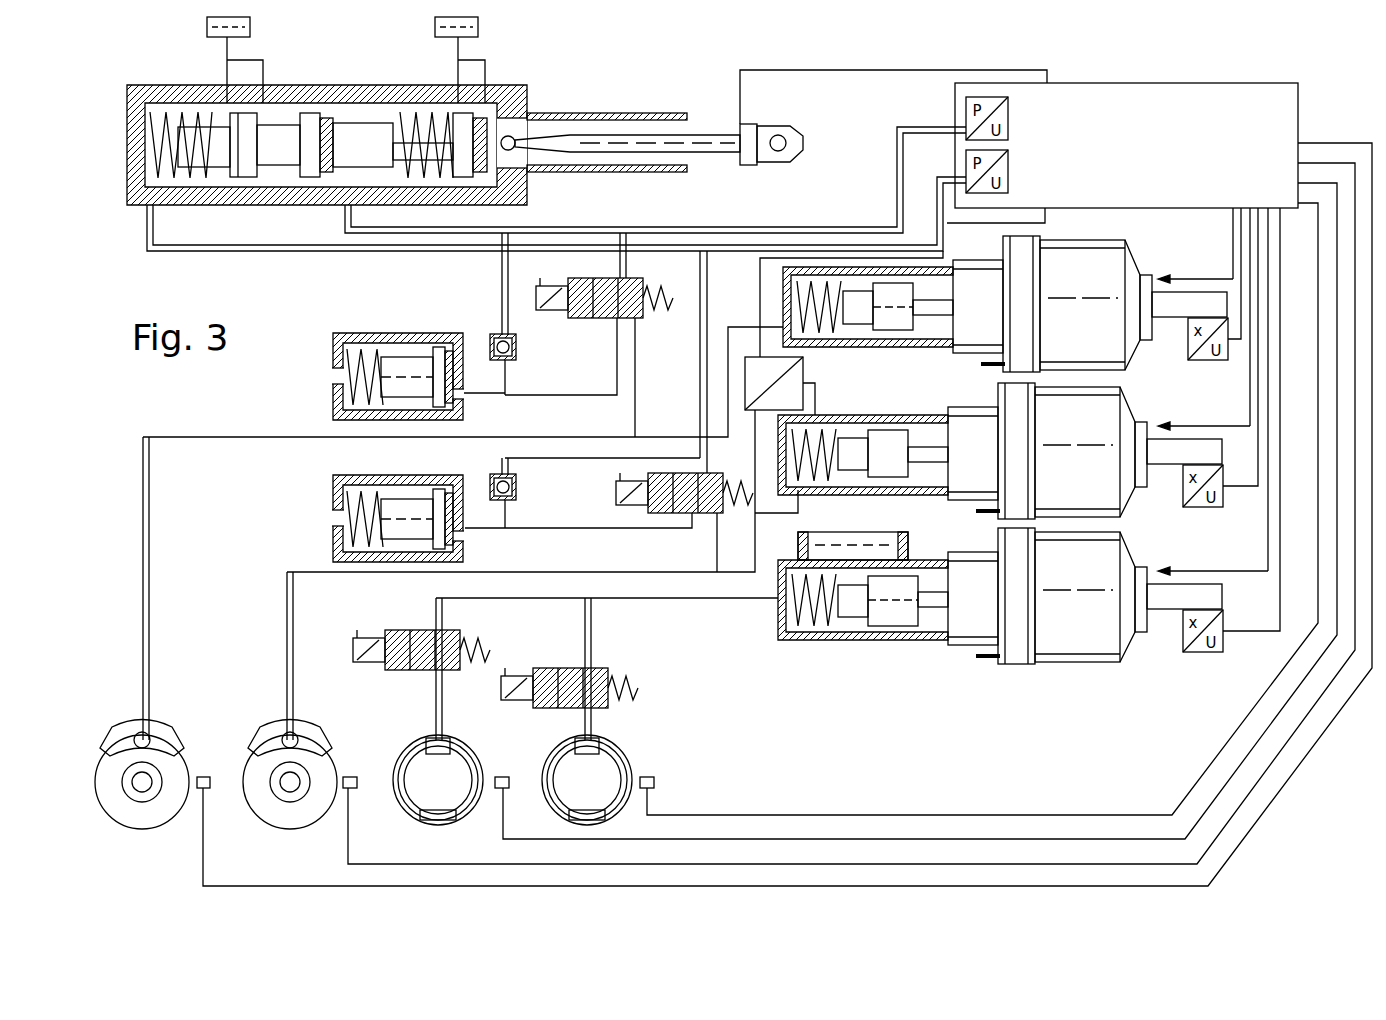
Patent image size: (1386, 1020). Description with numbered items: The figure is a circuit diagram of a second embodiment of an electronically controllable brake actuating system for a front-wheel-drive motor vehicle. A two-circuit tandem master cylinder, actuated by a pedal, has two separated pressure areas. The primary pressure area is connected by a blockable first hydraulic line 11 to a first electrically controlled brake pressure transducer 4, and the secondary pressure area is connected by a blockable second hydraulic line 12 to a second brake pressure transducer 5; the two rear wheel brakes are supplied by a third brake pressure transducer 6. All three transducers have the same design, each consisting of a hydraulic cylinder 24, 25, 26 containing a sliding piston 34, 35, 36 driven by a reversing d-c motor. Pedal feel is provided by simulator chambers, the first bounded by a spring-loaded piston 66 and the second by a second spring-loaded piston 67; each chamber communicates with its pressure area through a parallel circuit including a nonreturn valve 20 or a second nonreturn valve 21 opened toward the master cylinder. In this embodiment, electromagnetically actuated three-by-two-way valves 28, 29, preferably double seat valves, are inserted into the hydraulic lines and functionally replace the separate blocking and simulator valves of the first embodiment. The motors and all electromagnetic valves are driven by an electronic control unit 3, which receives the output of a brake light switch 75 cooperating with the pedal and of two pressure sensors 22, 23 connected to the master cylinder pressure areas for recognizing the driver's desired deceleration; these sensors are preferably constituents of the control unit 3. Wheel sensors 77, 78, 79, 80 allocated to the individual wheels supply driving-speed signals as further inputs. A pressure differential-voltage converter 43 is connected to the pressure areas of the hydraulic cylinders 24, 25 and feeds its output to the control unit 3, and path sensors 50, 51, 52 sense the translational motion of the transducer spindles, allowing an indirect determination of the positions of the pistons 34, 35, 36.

The electronic control unit 3 is at (1219, 100).
The brake pressure transducer 4 is at (1138, 260).
The brake pressure transducer 5 is at (1138, 408).
The brake pressure transducer 6 is at (1138, 553).
The first hydraulic line 11 is at (548, 228).
The second hydraulic line 12 is at (272, 262).
The nonreturn valve 20 is at (518, 490).
The second nonreturn valve 21 is at (518, 353).
The pressure sensor 22 is at (1010, 112).
The pressure sensor 23 is at (1010, 168).
The hydraulic cylinder 24 is at (827, 266).
The hydraulic cylinder 25 is at (868, 414).
The hydraulic cylinder 26 is at (818, 642).
The 3/2-way valve 28 is at (676, 473).
The 3/2-way valve 29 is at (600, 278).
The piston 34 is at (905, 285).
The piston 35 is at (900, 432).
The piston 36 is at (878, 605).
The pressure differential-voltage converter 43 is at (805, 373).
The path sensor 50 is at (1172, 328).
The path sensor 51 is at (1170, 474).
The path sensor 52 is at (1172, 634).
The spring-loaded piston 66 is at (385, 510).
The spring-loaded piston 67 is at (396, 368).
The brake light switch 75 is at (740, 158).
The wheel sensor 77 is at (204, 776).
The wheel sensor 78 is at (352, 776).
The wheel sensor 79 is at (510, 776).
The wheel sensor 80 is at (656, 778).